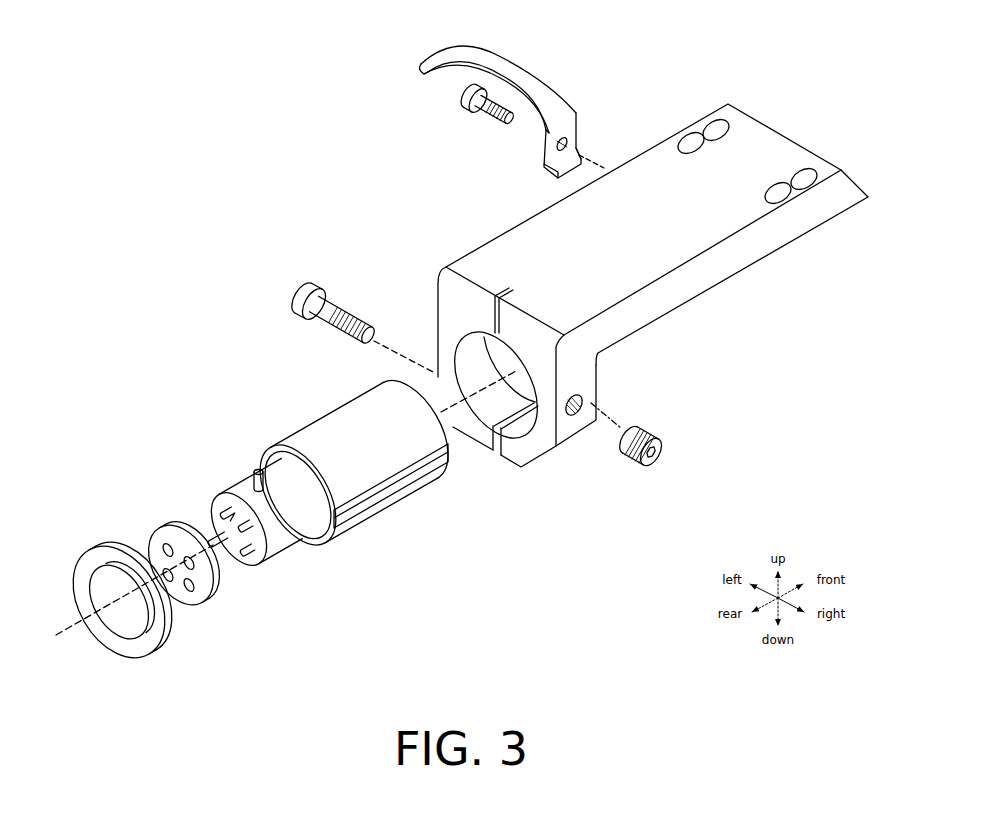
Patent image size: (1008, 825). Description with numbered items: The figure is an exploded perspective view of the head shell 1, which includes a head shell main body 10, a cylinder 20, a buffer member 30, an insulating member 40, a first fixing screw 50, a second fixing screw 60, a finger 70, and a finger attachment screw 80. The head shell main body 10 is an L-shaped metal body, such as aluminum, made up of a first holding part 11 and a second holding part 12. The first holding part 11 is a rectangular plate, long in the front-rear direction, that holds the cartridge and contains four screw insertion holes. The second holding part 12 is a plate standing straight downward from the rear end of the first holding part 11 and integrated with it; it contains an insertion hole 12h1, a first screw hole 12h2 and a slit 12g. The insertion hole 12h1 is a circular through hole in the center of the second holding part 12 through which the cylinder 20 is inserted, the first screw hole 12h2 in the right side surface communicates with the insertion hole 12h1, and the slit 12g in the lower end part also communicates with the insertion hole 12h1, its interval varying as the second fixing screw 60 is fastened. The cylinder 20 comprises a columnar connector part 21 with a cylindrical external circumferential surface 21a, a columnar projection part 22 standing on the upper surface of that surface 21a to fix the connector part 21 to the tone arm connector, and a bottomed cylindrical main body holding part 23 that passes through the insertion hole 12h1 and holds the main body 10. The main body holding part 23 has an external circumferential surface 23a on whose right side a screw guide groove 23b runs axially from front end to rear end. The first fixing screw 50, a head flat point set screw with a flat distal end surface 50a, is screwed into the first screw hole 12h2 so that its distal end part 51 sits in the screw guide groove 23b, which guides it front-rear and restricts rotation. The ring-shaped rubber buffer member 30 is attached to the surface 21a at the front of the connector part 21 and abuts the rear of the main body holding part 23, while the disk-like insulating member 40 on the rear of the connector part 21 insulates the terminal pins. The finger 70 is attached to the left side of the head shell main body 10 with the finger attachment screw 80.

The head shell 1 is at (150, 160).
The head shell main body 10 is at (778, 128).
The first holding part 11 is at (533, 212).
The second holding part 12 is at (433, 320).
The slit 12g is at (495, 452).
The insertion hole 12h1 is at (515, 442).
The first screw hole 12h2 is at (593, 403).
The cylinder 20 is at (280, 324).
The connector part 21 is at (233, 483).
The external circumferential surface 21a is at (282, 525).
The projection part 22 is at (255, 471).
The main body holding part 23 is at (327, 415).
The external circumferential surface 23a is at (362, 470).
The screw guide groove 23b is at (415, 470).
The buffer member 30 is at (87, 550).
The insulating member 40 is at (157, 528).
The first fixing screw 50 is at (653, 453).
The distal end surface 50a is at (617, 437).
The distal end part 51 is at (628, 430).
The second fixing screw 60 is at (307, 283).
The finger 70 is at (523, 73).
The finger attachment screw 80 is at (467, 97).